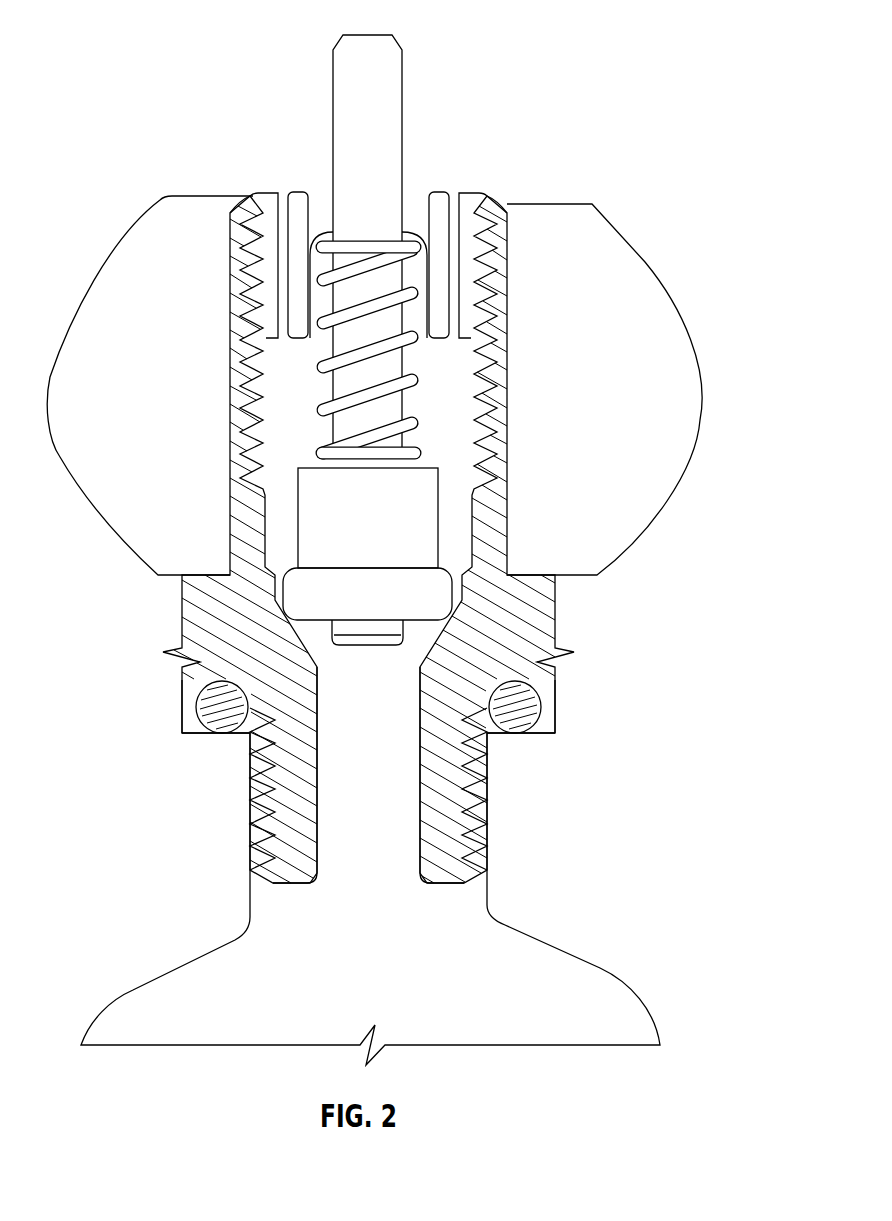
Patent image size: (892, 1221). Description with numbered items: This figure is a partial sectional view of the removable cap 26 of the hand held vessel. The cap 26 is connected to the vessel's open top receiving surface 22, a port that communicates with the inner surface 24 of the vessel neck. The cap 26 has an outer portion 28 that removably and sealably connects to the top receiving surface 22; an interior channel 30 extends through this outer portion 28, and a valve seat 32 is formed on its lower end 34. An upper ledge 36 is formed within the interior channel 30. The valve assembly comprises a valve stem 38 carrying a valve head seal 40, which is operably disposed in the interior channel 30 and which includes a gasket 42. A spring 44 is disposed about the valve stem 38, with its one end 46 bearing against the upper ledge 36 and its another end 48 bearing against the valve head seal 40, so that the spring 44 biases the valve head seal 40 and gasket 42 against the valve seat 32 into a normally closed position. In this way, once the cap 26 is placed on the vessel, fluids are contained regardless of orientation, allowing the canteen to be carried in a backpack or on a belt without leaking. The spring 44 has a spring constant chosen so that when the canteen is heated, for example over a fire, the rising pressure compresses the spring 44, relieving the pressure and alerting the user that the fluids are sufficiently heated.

The top receiving surface 22 is at (548, 705).
The inner surface 24 is at (465, 798).
The removable cap 26 is at (474, 47).
The outer portion 28 is at (258, 812).
The interior channel 30 is at (320, 850).
The valve seat 32 is at (458, 540).
The lower end 34 is at (500, 638).
The upper ledge 36 is at (307, 267).
The valve stem 38 is at (333, 140).
The valve head seal 40 is at (327, 542).
The gasket 42 is at (300, 588).
The spring 44 is at (398, 307).
The one end 46 is at (386, 247).
The another end 48 is at (425, 453).